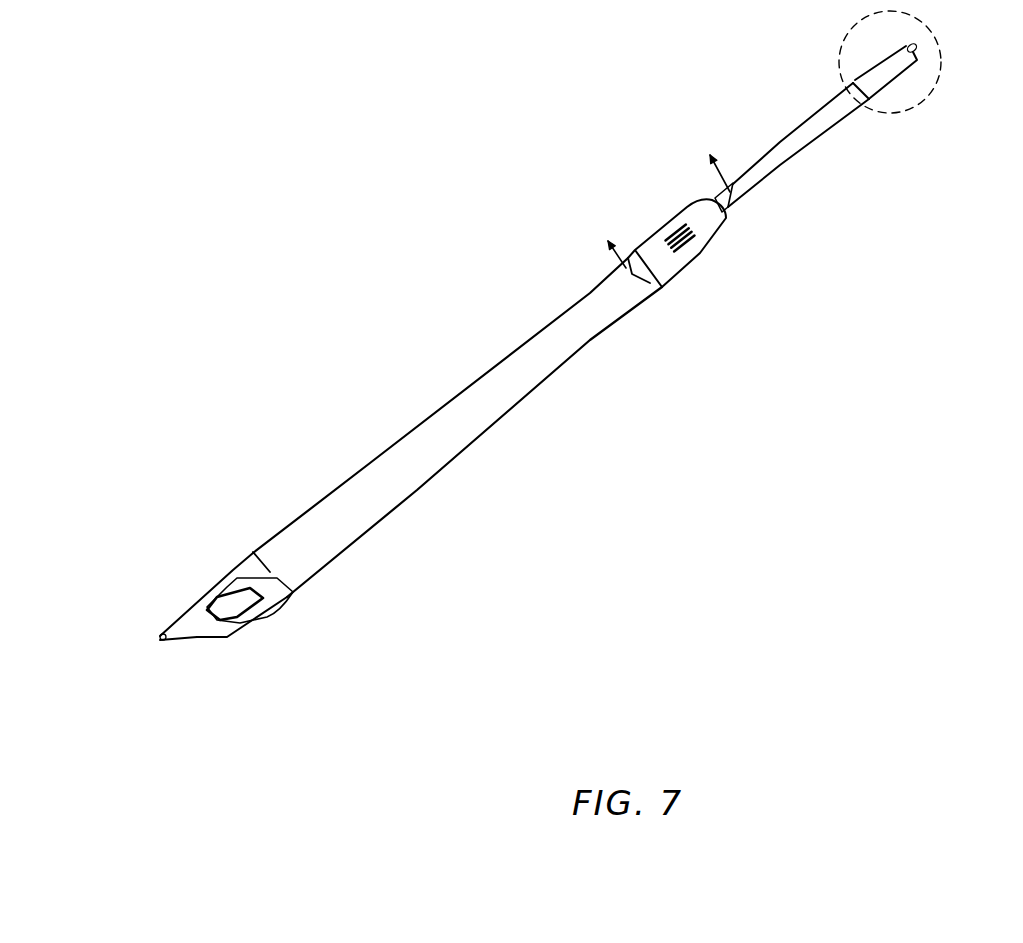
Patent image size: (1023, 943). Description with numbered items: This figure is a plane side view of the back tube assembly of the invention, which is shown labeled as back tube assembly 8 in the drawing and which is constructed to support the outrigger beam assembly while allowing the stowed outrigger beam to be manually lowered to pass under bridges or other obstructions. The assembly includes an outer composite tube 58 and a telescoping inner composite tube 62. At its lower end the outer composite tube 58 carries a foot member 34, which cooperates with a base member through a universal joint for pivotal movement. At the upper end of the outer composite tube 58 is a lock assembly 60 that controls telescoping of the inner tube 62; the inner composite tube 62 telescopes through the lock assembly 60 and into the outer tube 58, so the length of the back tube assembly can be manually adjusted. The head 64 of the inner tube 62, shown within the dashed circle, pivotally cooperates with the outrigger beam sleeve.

The surgical instrument 8 is at (418, 340).
The foot member 34 is at (240, 620).
The outer composite tube 58 is at (460, 453).
The lock assembly 60 is at (698, 254).
The inner composite tube 62 is at (797, 150).
The head 64 is at (880, 75).